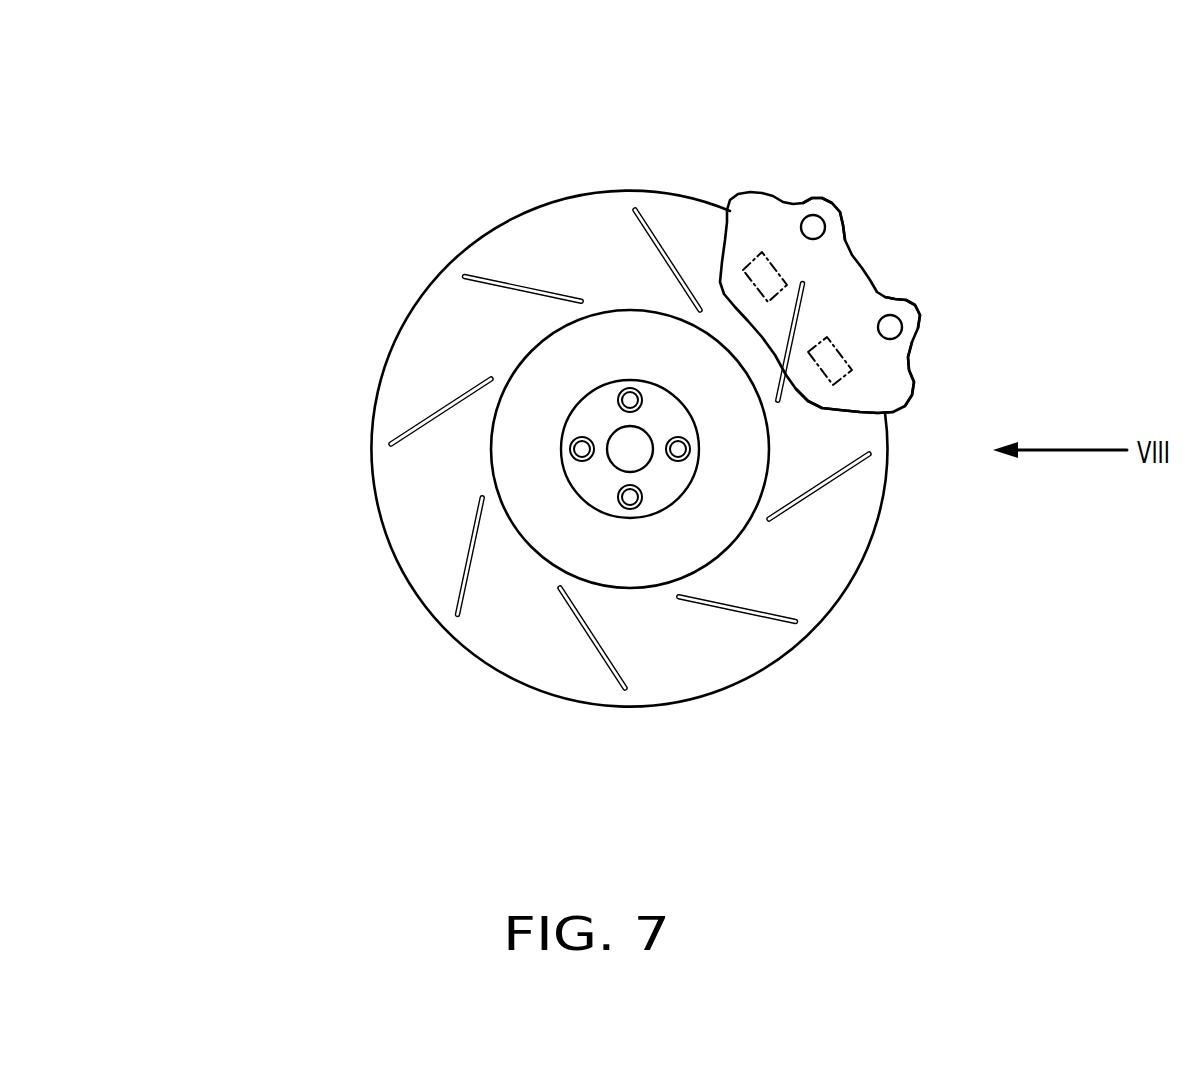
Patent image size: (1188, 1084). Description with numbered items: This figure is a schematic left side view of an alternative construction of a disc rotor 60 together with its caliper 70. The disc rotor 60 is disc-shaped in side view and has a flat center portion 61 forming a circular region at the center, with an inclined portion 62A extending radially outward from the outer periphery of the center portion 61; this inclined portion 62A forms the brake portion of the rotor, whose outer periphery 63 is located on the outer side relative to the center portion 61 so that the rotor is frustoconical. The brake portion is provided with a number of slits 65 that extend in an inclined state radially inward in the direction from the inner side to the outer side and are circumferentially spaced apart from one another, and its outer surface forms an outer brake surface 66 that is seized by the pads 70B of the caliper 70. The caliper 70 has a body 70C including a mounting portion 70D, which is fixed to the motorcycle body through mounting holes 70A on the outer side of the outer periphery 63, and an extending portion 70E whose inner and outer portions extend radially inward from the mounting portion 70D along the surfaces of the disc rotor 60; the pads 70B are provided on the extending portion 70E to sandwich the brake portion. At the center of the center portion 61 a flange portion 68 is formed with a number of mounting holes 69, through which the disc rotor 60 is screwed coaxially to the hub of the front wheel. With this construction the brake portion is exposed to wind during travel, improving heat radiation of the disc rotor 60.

The disc rotor 60 is at (403, 203).
The center portion 61 is at (530, 428).
The inclined portion 62A is at (437, 335).
The outer periphery 63 is at (582, 193).
The slits 65 is at (737, 610).
The outer brake surface 66 is at (417, 392).
The flange portion 68 is at (603, 497).
The mounting holes 69 is at (568, 453).
The caliper 70 is at (862, 268).
The mounting holes 70A is at (813, 214).
The pads 70B is at (745, 268).
The body 70C is at (917, 388).
The mounting portion 70D is at (832, 203).
The extending portion 70E is at (822, 410).